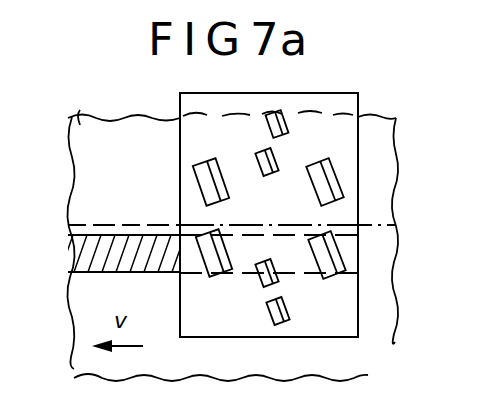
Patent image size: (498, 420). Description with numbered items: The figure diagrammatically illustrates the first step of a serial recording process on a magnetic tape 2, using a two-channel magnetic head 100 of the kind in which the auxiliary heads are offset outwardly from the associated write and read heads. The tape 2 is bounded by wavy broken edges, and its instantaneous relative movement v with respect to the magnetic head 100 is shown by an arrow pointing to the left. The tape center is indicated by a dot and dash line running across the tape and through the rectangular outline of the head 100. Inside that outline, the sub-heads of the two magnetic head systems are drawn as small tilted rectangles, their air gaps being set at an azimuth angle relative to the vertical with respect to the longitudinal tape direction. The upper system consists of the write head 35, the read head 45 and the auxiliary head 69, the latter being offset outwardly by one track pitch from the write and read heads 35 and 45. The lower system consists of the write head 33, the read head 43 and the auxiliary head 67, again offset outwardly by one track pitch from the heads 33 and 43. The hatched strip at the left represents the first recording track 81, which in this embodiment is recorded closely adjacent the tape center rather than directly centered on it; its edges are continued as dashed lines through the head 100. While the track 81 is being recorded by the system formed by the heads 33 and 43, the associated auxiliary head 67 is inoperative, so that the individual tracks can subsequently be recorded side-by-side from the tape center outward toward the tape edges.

The magnetic tape 2 is at (83, 133).
The magnetic head 100 is at (181, 145).
The recording track 81 is at (118, 245).
The write head 35 is at (213, 163).
The read head 45 is at (331, 164).
The auxiliary head 69 is at (287, 133).
The read head 43 is at (213, 273).
The write head 33 is at (334, 261).
The auxiliary head 67 is at (262, 282).